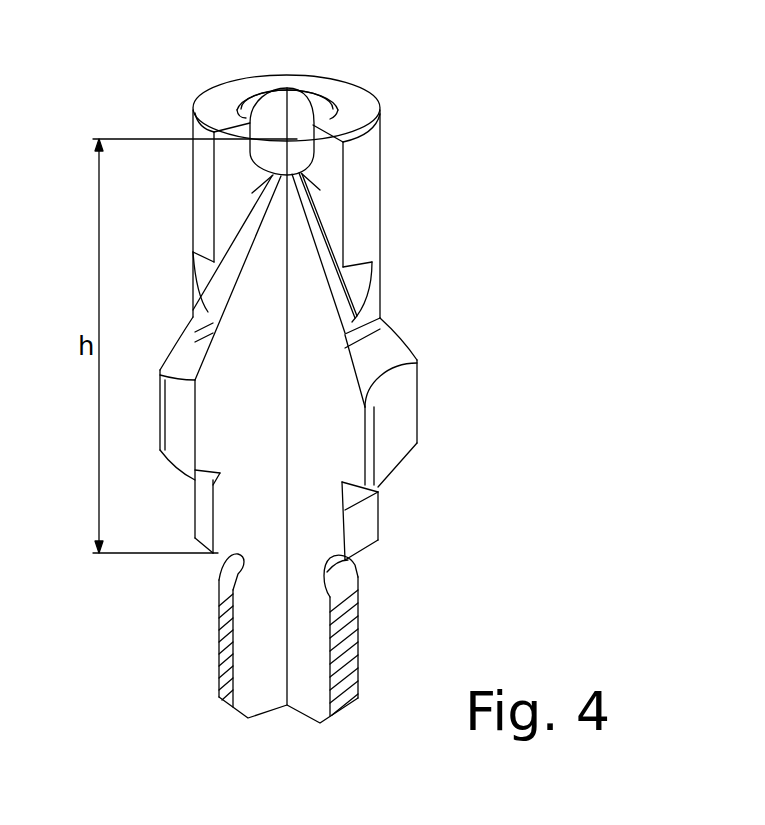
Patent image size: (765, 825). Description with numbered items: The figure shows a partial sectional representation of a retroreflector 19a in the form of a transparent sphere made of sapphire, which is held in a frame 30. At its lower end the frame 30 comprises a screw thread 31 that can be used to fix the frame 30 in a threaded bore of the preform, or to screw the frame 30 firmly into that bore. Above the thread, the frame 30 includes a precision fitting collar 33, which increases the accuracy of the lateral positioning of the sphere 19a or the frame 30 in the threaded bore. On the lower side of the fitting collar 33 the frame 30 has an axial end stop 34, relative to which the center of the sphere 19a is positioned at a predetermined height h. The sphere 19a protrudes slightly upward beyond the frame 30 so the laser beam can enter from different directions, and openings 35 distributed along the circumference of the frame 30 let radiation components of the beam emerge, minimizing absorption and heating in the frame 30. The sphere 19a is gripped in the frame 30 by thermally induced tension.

The retroreflector 19a is at (272, 118).
The frame 30 is at (402, 203).
The openings 35 is at (213, 272).
The precision fitting collar 33 is at (366, 523).
The axial end stop 34 is at (366, 564).
The screw thread 31 is at (220, 613).